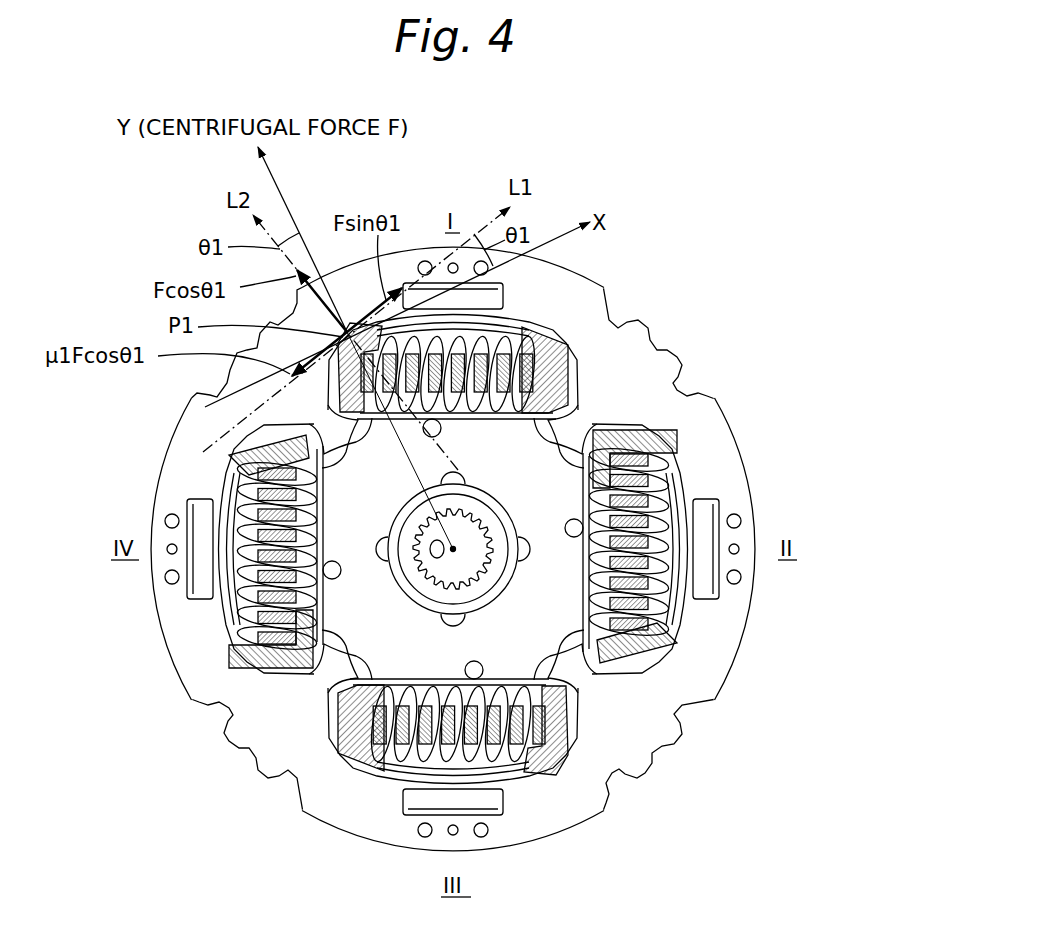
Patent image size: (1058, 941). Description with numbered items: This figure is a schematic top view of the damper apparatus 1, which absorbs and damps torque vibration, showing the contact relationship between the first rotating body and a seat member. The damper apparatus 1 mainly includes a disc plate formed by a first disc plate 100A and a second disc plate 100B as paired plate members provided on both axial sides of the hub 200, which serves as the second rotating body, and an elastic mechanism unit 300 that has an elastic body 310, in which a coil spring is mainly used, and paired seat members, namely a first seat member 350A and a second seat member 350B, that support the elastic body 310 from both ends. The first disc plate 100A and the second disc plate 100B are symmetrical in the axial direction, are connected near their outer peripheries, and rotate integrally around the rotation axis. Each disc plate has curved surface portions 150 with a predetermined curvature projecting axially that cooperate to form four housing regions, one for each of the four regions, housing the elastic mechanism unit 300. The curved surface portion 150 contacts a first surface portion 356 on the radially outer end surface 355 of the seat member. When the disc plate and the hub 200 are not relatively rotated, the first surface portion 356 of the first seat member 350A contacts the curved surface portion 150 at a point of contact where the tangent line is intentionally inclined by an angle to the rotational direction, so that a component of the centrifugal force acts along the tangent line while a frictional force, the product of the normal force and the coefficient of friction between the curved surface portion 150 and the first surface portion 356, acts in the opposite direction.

The damper apparatus 1 is at (500, 505).
The first disc plate 100A is at (528, 549).
The second disc plate 100B is at (724, 393).
The curved surface portion 150 is at (226, 466).
The hub 200 is at (678, 726).
The elastic mechanism unit 300 is at (678, 594).
The elastic body 310 is at (674, 518).
The first seat member 350A is at (660, 460).
The second seat member 350B is at (662, 648).
The radially outer end surface 355 is at (688, 466).
The first surface portion 356 is at (698, 549).